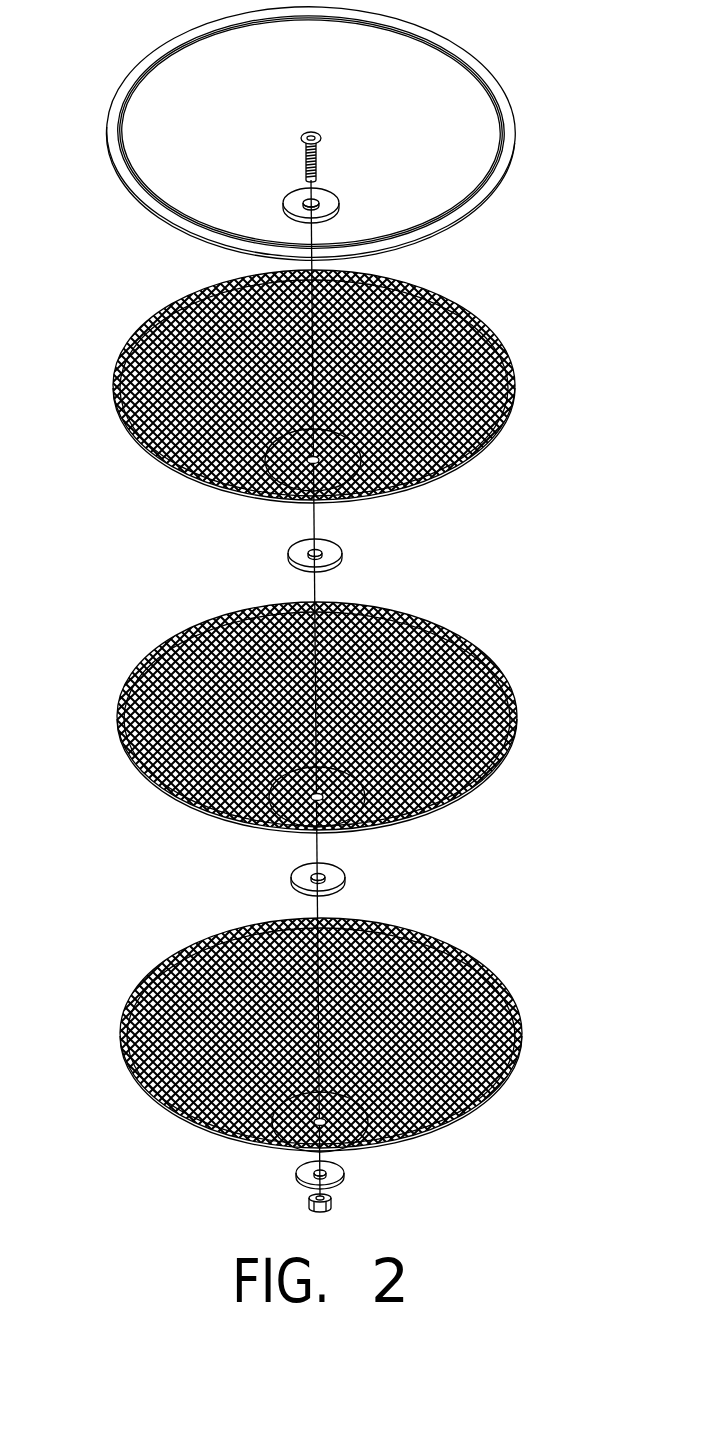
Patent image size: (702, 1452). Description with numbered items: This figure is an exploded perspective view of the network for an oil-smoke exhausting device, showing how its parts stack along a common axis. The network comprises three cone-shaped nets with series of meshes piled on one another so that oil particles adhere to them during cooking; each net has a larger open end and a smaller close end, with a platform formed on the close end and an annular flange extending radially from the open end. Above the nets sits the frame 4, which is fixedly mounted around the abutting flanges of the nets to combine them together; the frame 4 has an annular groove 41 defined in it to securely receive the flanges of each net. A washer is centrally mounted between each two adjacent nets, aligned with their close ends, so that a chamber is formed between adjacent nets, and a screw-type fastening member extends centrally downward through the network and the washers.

The frame 4 is at (497, 160).
The annular groove 41 is at (437, 40).